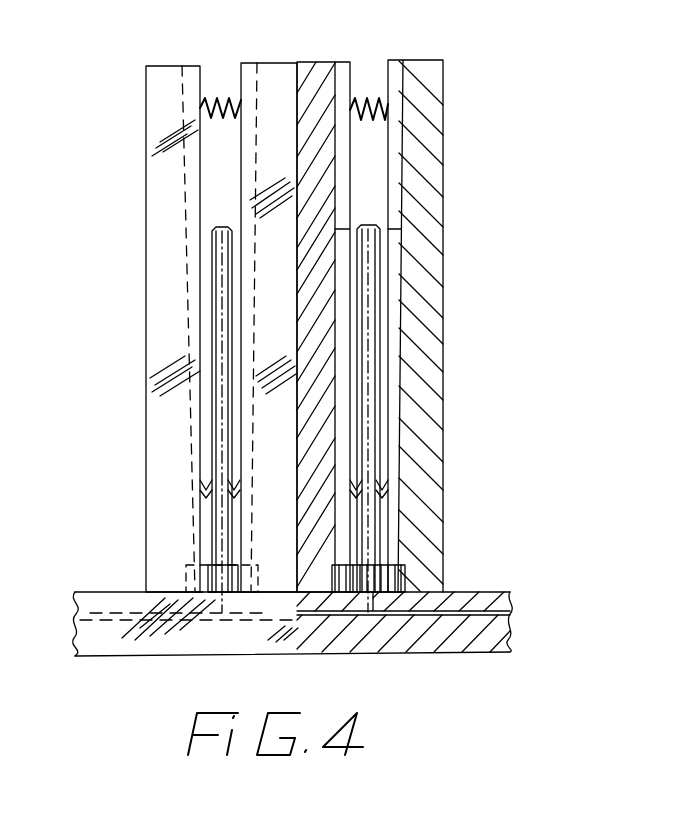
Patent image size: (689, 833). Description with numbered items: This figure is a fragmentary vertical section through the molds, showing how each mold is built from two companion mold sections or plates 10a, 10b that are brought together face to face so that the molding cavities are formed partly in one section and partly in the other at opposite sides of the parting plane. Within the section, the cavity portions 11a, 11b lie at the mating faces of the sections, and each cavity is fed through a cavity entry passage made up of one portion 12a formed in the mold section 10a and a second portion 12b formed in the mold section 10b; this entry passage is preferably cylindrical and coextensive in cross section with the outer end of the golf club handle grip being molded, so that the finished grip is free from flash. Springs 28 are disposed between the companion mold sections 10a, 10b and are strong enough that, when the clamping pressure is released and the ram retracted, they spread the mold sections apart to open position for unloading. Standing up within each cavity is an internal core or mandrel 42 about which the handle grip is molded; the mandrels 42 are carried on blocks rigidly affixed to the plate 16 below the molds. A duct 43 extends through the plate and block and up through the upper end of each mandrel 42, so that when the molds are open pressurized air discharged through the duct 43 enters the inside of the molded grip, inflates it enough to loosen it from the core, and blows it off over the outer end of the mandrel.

The mold section 10a is at (160, 66).
The mold section 10b is at (270, 72).
The first spacer strip 11a is at (192, 394).
The second spacer strip 11b is at (246, 446).
The entry passage portion 12a is at (192, 168).
The entry passage portion 12b is at (250, 73).
The plate 16 is at (485, 591).
The spring 28 is at (363, 100).
The internal core 42 is at (373, 295).
The duct 43 is at (437, 614).